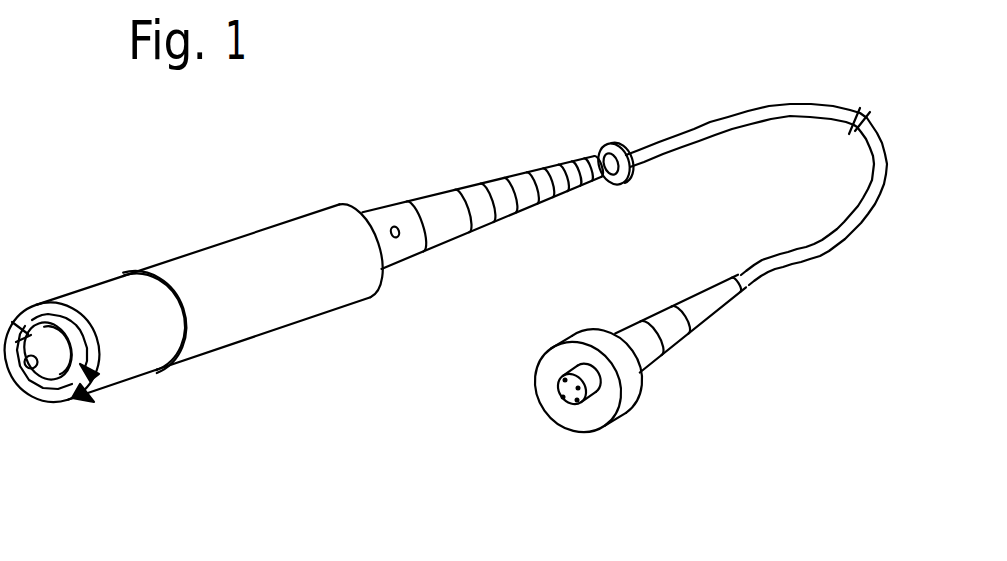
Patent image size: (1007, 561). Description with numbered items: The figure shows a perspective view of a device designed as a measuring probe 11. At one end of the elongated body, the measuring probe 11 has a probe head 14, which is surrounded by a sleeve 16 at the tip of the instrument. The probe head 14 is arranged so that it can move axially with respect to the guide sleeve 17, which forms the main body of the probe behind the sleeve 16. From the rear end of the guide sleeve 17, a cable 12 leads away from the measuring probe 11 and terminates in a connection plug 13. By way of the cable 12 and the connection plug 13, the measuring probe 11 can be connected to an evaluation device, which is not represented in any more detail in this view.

The measuring probe 11 is at (263, 383).
The cable 12 is at (735, 120).
The connection plug 13 is at (680, 347).
The probe head 14 is at (50, 367).
The sleeve 16 is at (88, 300).
The guide sleeve 17 is at (290, 245).